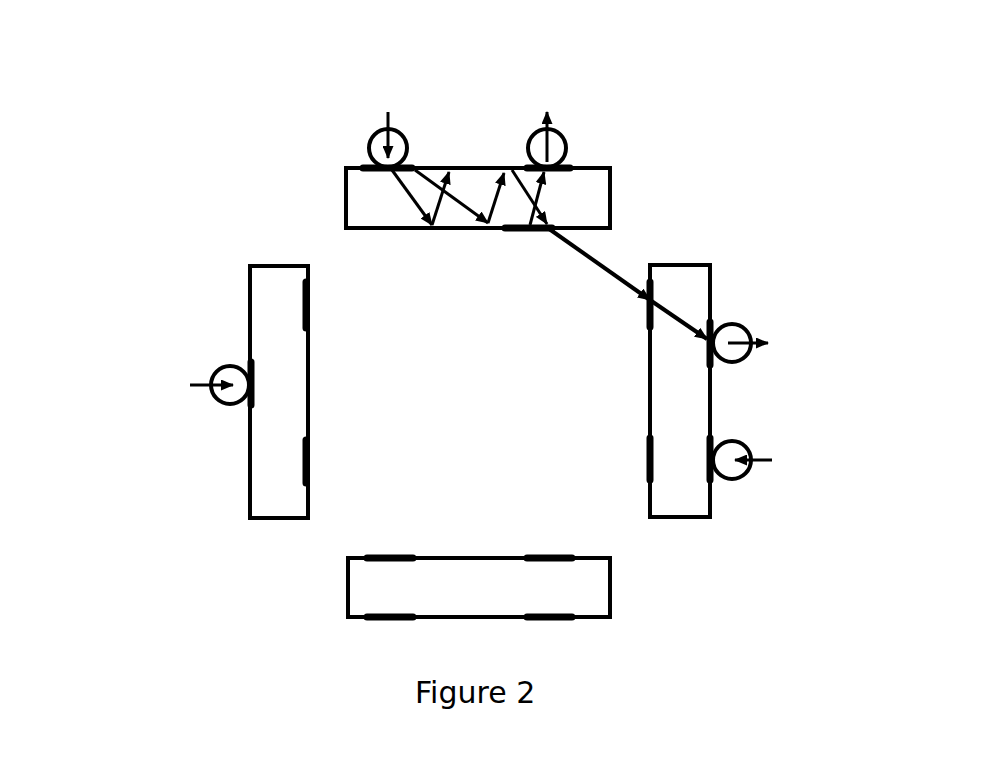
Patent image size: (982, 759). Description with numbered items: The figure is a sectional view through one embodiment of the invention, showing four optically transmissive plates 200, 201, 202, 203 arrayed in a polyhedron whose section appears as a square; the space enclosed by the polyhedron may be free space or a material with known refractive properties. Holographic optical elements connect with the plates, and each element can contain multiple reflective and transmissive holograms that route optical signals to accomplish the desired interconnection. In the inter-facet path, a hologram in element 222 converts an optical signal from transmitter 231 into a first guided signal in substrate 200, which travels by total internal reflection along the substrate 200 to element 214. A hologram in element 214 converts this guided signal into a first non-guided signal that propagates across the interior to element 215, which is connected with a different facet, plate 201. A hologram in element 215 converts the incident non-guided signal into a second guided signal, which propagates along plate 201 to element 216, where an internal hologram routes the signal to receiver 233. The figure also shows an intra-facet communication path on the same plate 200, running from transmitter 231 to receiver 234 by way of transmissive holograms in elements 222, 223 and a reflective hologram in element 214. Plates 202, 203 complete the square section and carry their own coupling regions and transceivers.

The optically transmissive plate 200 is at (347, 208).
The optically transmissive plate 201 is at (672, 518).
The optically transmissive plate 202 is at (348, 580).
The optically transmissive plate 203 is at (250, 283).
The holographic optical element 214 is at (553, 227).
The holographic optical element 215 is at (651, 283).
The holographic optical element 216 is at (711, 365).
The holographic optical element 222 is at (357, 167).
The holographic optical element 223 is at (527, 167).
The transmitter 231 is at (376, 160).
The receiver 233 is at (745, 328).
The receiver 234 is at (568, 148).